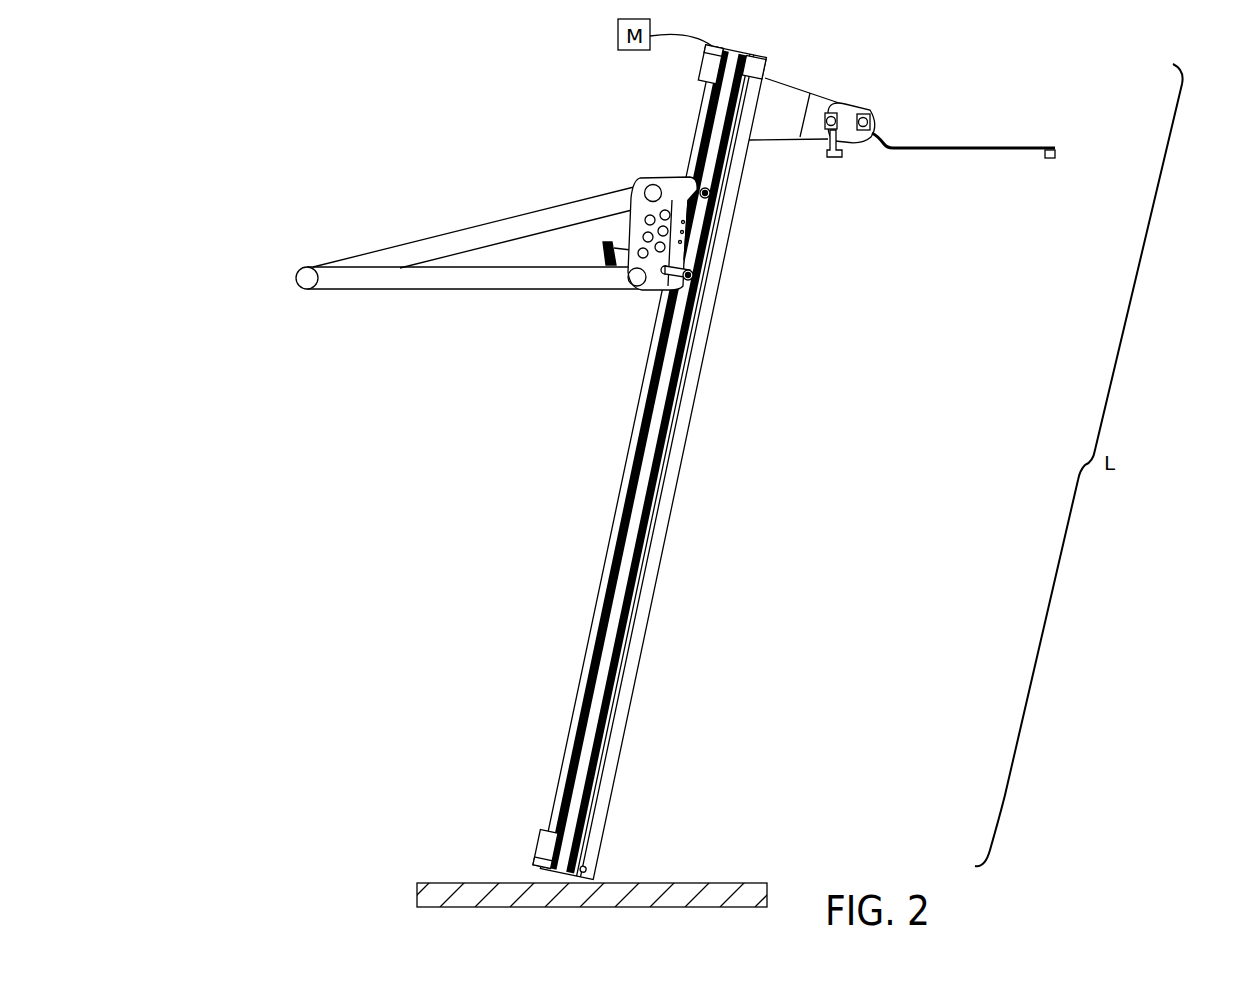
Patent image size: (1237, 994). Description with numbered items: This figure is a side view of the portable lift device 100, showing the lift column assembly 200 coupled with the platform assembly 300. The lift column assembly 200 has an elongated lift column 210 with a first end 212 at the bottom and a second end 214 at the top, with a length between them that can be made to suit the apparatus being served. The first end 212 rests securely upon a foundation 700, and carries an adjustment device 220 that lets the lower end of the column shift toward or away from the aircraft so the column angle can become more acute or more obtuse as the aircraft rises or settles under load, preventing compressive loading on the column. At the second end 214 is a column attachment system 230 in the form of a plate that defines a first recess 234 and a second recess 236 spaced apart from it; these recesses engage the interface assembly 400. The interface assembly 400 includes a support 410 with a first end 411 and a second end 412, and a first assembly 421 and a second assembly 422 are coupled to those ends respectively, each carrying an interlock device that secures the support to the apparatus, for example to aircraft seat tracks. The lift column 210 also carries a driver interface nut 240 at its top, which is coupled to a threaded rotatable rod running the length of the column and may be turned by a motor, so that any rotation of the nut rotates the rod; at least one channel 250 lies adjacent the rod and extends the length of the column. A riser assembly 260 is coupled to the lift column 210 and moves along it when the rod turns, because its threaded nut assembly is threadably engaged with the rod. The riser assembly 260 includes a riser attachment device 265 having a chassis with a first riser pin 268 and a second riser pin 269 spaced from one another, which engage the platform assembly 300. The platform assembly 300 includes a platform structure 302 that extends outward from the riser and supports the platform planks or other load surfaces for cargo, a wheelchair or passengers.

The portable lift device 100 is at (342, 154).
The lift column assembly 200 is at (645, 477).
The lift column 210 is at (659, 567).
The first end 212 is at (594, 879).
The second end 214 is at (761, 54).
The adjustment device 220 is at (580, 880).
The column attachment system 230 is at (893, 96).
The first recess 234 is at (869, 117).
The second recess 236 is at (838, 114).
The driver interface nut 240 is at (718, 44).
The channel 250 is at (655, 433).
The riser assembly 260 is at (685, 255).
The riser attachment device 265 is at (642, 302).
The first riser pin 268 is at (652, 183).
The second riser pin 269 is at (704, 271).
The platform assembly 300 is at (429, 281).
The platform structure 302 is at (440, 291).
The interface assembly 400 is at (940, 165).
The support 410 is at (980, 150).
The first end 411 is at (810, 177).
The second end 412 is at (1052, 158).
The first assembly 421 is at (836, 160).
The second assembly 422 is at (1056, 152).
The foundation 700 is at (712, 888).